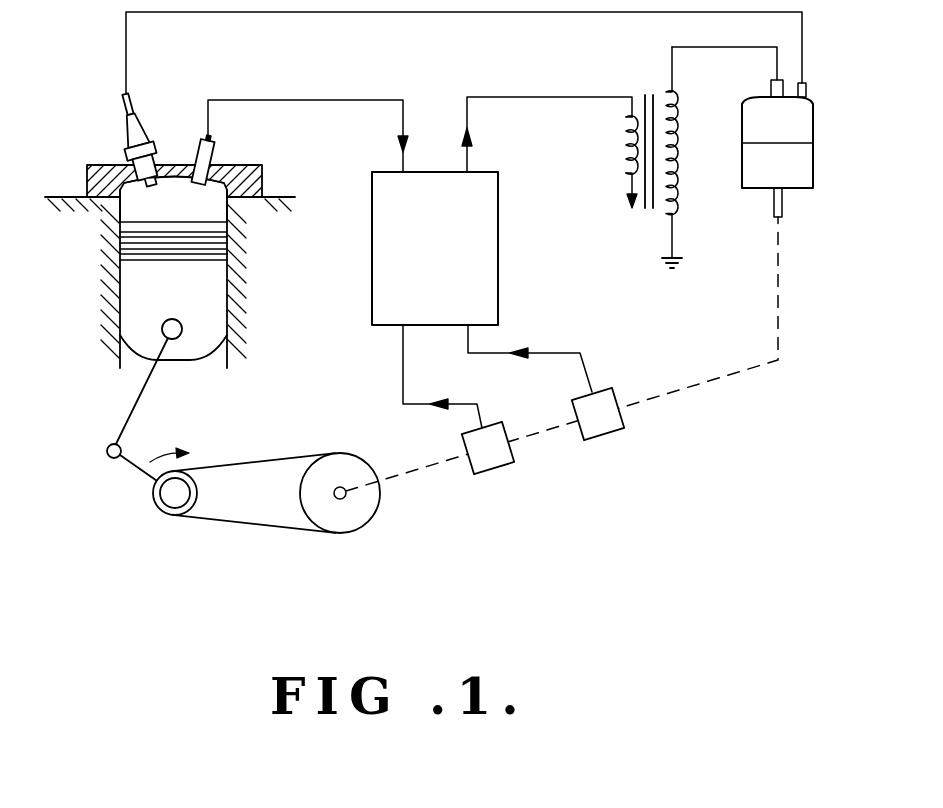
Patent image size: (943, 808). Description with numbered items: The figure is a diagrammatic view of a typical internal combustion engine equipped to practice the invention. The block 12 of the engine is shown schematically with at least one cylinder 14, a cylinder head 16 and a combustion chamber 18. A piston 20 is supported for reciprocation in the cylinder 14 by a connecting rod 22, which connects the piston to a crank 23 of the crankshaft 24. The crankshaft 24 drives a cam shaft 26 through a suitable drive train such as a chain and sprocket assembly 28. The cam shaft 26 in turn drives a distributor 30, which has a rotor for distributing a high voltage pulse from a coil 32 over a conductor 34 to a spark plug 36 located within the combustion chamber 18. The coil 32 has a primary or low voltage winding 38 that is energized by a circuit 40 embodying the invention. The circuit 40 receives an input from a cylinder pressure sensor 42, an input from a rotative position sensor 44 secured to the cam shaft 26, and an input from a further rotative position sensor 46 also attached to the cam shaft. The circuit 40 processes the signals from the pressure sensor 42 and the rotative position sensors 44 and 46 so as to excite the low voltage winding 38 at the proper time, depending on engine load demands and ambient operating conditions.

The block 12 is at (106, 262).
The cylinder 14 is at (222, 212).
The cylinder head 16 is at (264, 170).
The combustion chamber 18 is at (167, 182).
The piston 20 is at (198, 346).
The connecting rod 22 is at (140, 404).
The crank 23 is at (134, 467).
The crankshaft 24 is at (174, 515).
The cam shaft 26 is at (411, 477).
The chain and sprocket assembly 28 is at (283, 530).
The distributor 30 is at (810, 190).
The coil 32 is at (680, 166).
The conductor 34 is at (499, 14).
The spark plug 36 is at (137, 113).
The primary or low voltage winding 38 is at (626, 158).
The circuit 40 is at (500, 254).
The cylinder pressure sensor 42 is at (210, 158).
The rotative position sensor 44 is at (496, 466).
The rotative position sensor 46 is at (606, 432).